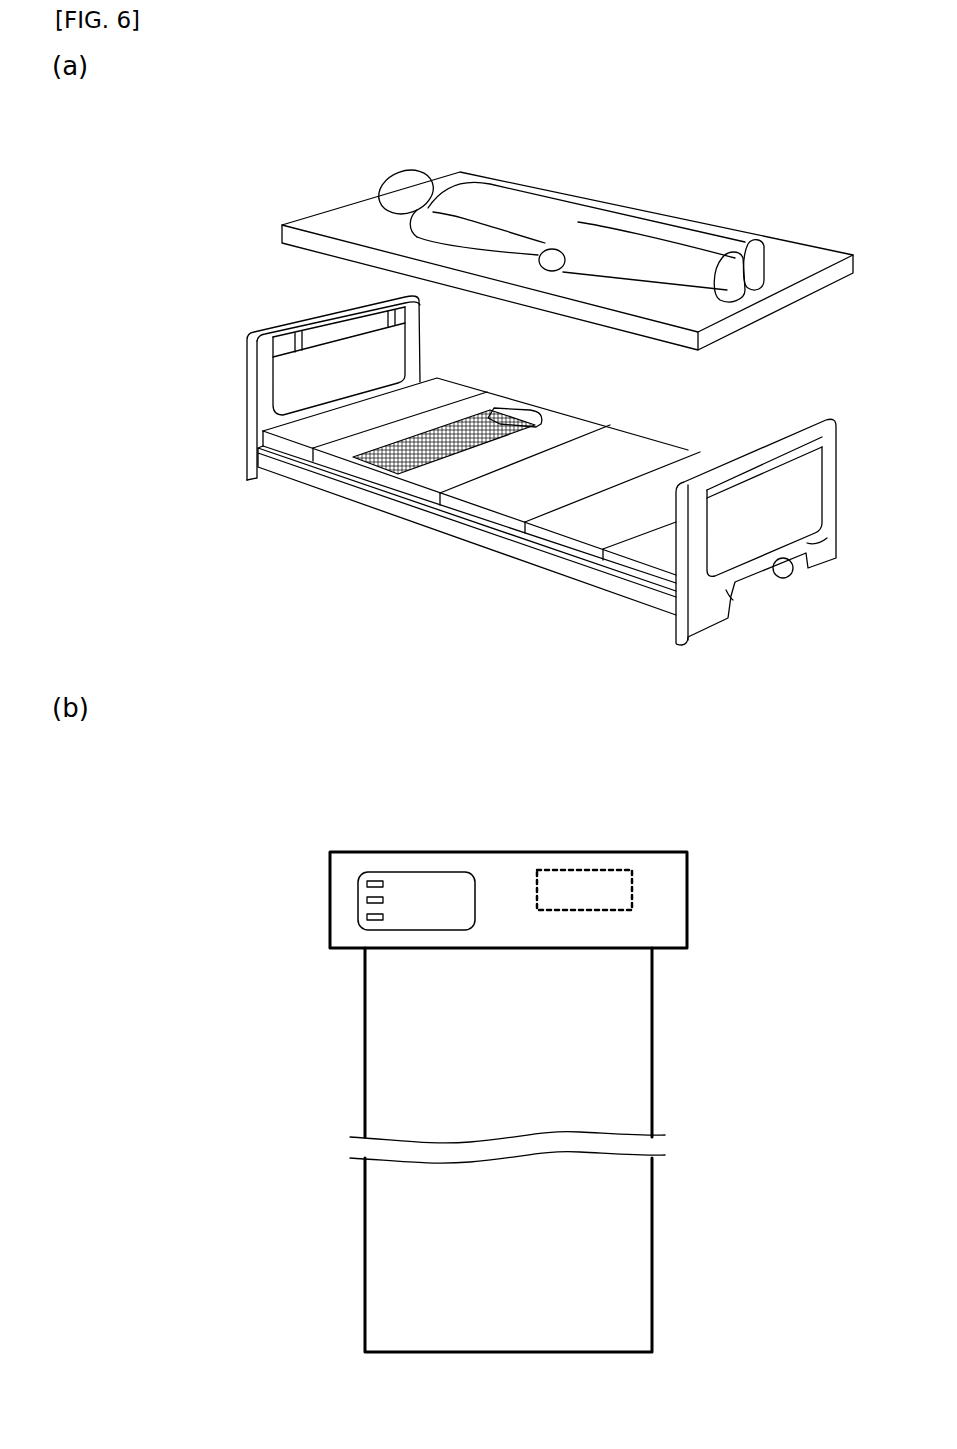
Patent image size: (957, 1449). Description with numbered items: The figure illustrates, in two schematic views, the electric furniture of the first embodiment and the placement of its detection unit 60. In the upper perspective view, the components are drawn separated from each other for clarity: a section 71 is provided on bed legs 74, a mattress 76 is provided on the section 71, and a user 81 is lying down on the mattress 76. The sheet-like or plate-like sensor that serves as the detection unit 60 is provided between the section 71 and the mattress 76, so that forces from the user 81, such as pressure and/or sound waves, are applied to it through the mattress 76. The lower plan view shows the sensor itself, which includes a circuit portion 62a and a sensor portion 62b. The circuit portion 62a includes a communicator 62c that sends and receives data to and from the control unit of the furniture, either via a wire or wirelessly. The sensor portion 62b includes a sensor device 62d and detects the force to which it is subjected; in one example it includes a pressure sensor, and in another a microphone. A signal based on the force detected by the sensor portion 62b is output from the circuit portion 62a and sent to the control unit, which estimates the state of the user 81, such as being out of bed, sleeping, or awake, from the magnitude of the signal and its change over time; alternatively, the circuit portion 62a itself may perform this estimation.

The detection unit 60 is at (389, 490).
The circuit portion 62a is at (767, 852).
The sensor portion 62b is at (767, 950).
The communicator 62c is at (625, 885).
The sensor device 62d is at (625, 1019).
The section 71 is at (563, 545).
The bed legs 74 is at (680, 628).
The mattress 76 is at (812, 257).
The user 81 is at (575, 218).